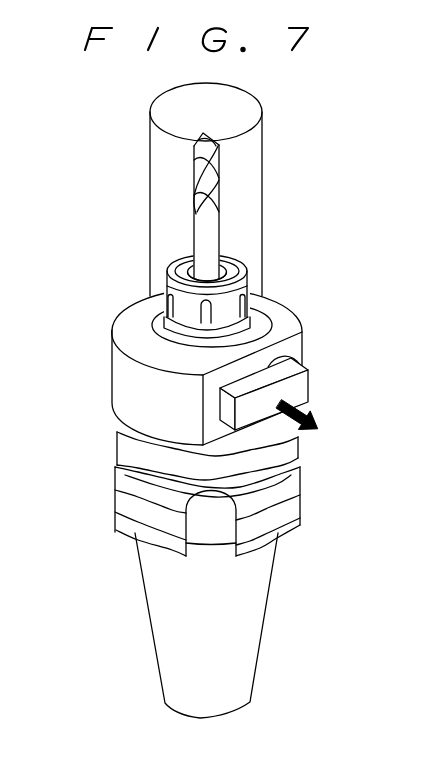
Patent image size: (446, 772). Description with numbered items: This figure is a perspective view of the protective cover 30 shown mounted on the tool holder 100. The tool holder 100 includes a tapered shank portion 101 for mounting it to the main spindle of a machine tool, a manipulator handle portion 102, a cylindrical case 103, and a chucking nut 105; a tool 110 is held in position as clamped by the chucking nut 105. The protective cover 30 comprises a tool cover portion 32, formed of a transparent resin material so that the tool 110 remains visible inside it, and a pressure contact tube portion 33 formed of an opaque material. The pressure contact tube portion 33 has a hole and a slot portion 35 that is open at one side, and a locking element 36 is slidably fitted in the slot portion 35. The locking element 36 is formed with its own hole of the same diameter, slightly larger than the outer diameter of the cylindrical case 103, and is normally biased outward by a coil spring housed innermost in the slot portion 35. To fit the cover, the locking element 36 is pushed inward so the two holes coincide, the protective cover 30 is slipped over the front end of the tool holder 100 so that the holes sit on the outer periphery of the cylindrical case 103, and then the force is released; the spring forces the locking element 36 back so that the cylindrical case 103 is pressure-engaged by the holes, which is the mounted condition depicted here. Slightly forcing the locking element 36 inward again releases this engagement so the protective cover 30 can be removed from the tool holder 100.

The protective cover 30 is at (217, 189).
The tool cover portion 32 is at (155, 153).
The pressure contact tube portion 33 is at (172, 367).
The slot portion 35 is at (283, 360).
The locking element 36 is at (297, 389).
The tool holder 100 is at (166, 575).
The tapered shank portion 101 is at (150, 577).
The manipulator handle portion 102 is at (117, 485).
The cylindrical case 103 is at (170, 335).
The chucking nut 105 is at (243, 270).
The tool 110 is at (213, 168).